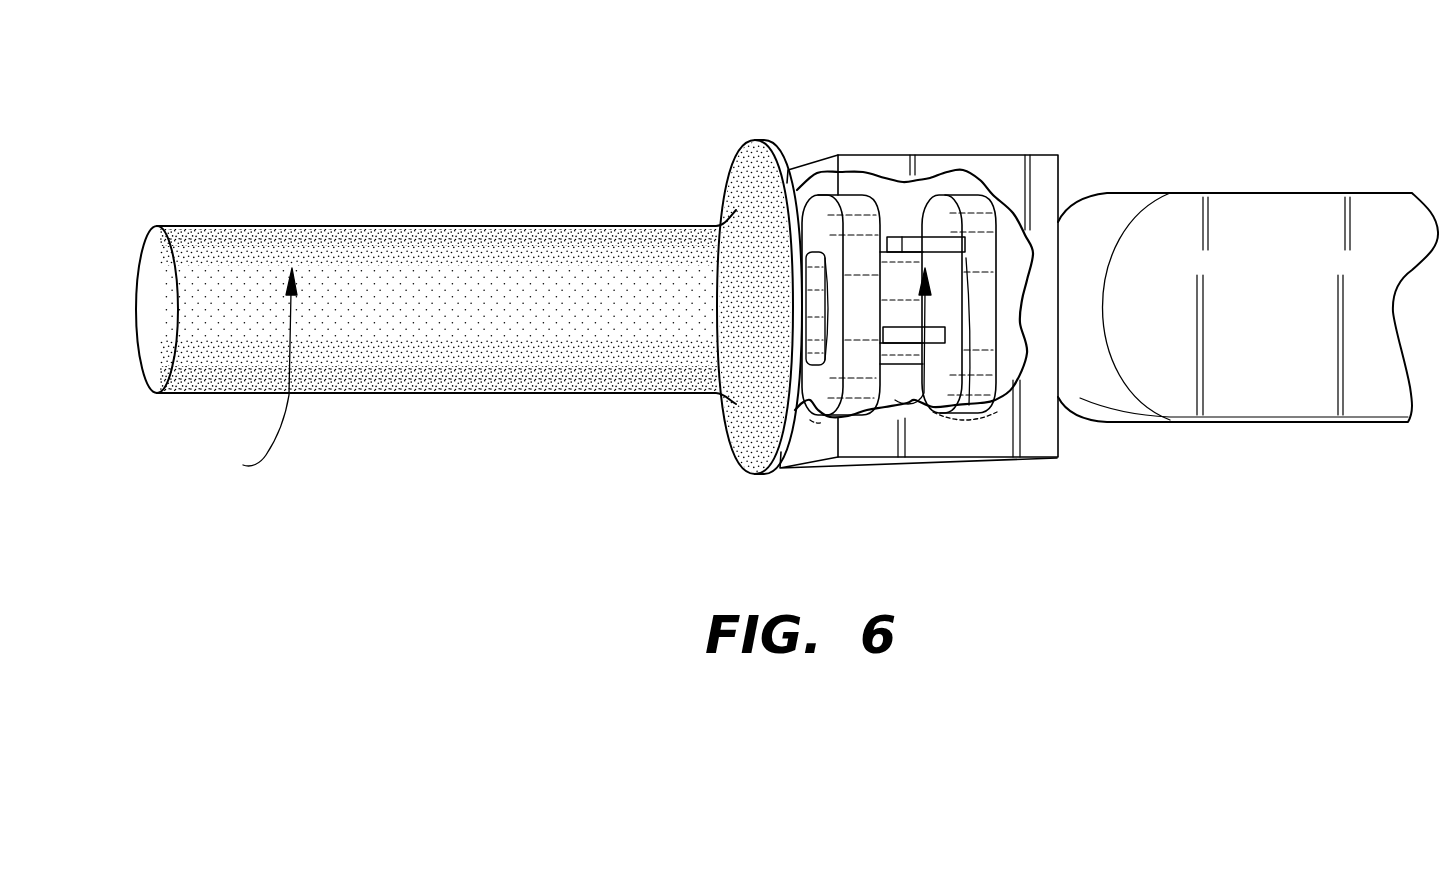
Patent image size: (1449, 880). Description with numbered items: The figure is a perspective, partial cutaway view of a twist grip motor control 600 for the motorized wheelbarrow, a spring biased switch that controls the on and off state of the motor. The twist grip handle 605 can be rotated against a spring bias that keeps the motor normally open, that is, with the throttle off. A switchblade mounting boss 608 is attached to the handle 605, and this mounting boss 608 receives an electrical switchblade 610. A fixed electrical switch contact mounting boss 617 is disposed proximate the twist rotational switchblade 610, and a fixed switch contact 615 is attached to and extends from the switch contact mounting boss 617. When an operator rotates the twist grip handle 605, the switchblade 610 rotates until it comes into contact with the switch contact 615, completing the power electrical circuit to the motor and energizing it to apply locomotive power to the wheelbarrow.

The twist grip motor control 600 is at (578, 84).
The twist grip handle 605 is at (473, 230).
The switchblade mounting boss 608 is at (835, 195).
The electrical switchblade 610 is at (935, 335).
The fixed switch contact 615 is at (913, 237).
The fixed electrical switch contact mounting boss 617 is at (988, 368).